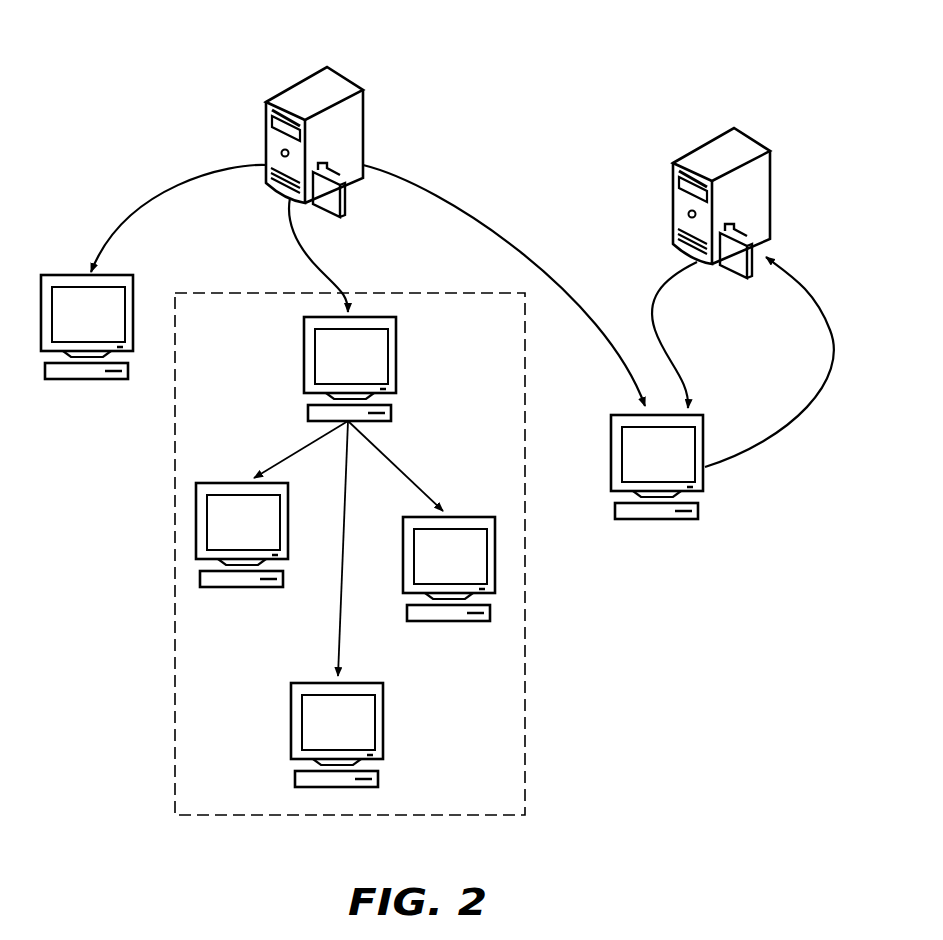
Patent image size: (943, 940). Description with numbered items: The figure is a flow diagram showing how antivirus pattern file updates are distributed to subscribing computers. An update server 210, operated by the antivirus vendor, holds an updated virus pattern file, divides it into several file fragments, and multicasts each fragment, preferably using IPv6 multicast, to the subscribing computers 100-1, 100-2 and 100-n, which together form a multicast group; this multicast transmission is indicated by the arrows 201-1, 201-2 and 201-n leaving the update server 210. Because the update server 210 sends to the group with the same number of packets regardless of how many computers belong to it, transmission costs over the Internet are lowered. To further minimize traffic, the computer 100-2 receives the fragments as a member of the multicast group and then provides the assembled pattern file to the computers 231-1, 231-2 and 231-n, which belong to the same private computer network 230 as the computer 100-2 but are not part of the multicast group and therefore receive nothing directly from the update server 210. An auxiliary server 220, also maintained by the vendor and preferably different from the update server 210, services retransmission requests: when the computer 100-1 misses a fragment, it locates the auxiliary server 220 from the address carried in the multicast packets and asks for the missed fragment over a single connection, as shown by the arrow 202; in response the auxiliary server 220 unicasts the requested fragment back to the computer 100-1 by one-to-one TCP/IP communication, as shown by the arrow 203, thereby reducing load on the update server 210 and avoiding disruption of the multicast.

The update server 210 is at (318, 78).
The auxiliary server 220 is at (767, 162).
The computer 100-n is at (67, 379).
The computer 100-2 is at (391, 408).
The computer 100-1 is at (647, 519).
The arrow 201-n is at (125, 202).
The arrow 201-2 is at (273, 220).
The arrow 201-1 is at (487, 227).
The arrow 202 is at (817, 308).
The arrow 203 is at (660, 287).
The private computer network 230 is at (175, 557).
The computer 231-1 is at (217, 588).
The computer 231-2 is at (293, 771).
The computer 231-n is at (440, 621).